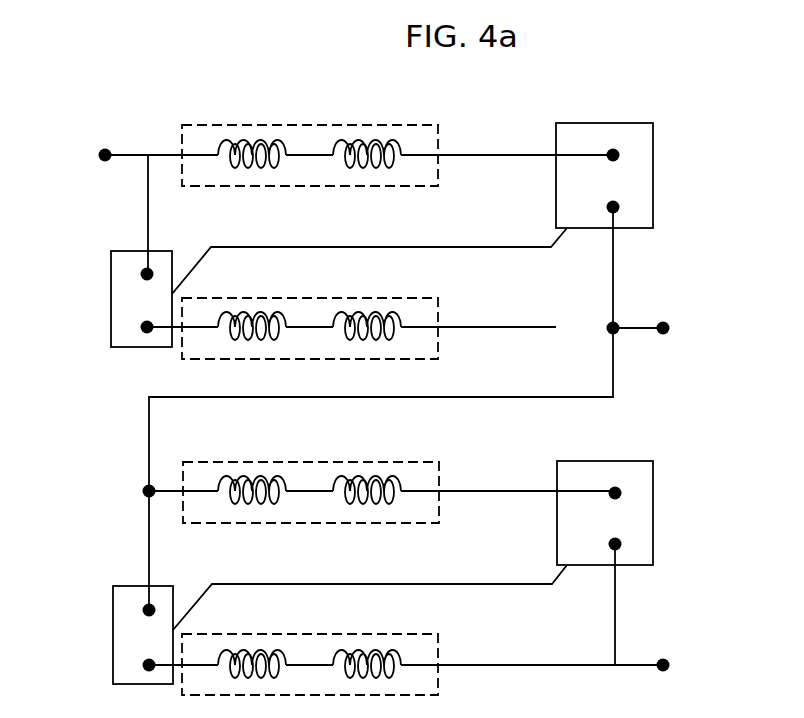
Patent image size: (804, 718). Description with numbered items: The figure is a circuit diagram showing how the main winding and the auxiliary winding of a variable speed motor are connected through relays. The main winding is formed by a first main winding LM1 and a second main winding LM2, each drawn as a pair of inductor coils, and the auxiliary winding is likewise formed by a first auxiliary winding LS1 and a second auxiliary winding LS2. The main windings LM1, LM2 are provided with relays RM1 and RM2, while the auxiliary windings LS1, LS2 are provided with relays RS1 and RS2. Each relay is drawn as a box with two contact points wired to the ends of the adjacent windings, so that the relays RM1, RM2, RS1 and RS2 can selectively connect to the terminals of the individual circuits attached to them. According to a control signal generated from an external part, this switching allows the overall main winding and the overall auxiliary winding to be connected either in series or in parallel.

The first main winding LM1 is at (438, 142).
The second main winding LM2 is at (438, 315).
The first auxiliary winding LS1 is at (439, 478).
The second auxiliary winding LS2 is at (438, 650).
The relay RM1 is at (653, 155).
The relay RM2 is at (111, 276).
The relay RS1 is at (653, 493).
The relay RS2 is at (113, 613).